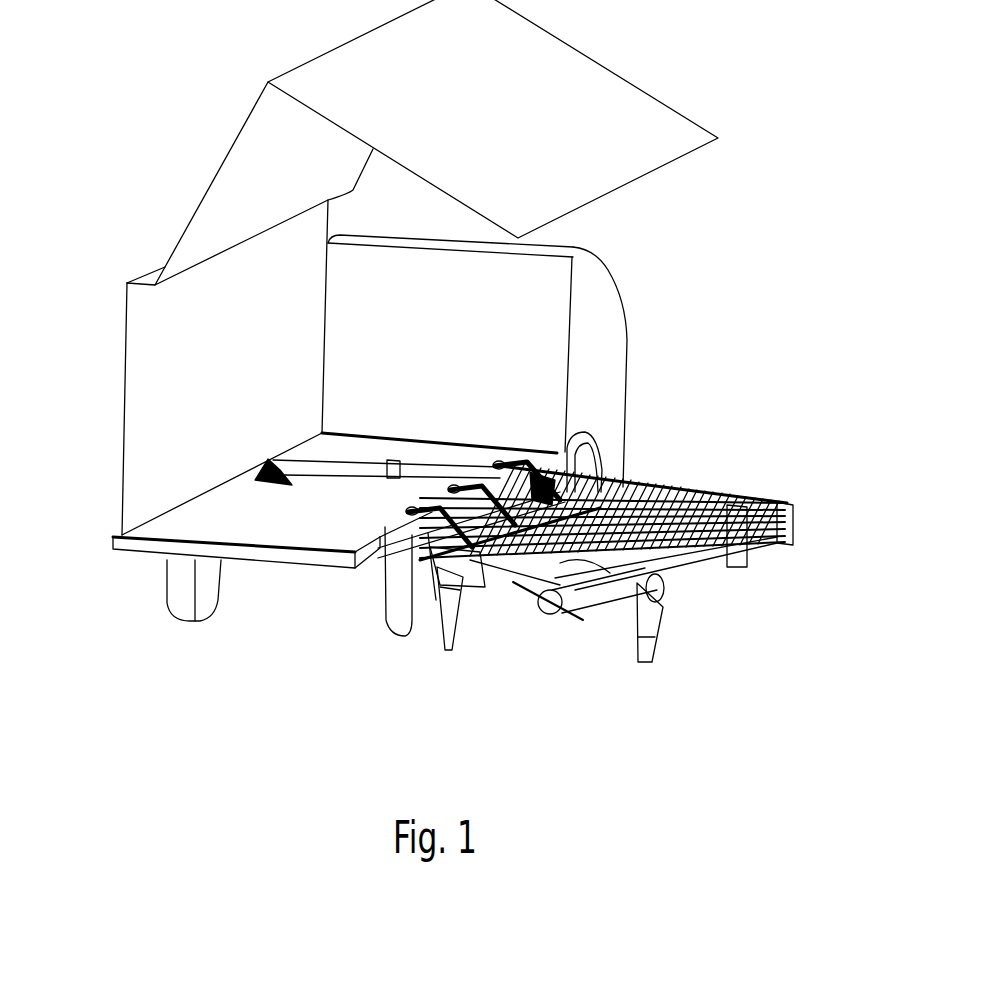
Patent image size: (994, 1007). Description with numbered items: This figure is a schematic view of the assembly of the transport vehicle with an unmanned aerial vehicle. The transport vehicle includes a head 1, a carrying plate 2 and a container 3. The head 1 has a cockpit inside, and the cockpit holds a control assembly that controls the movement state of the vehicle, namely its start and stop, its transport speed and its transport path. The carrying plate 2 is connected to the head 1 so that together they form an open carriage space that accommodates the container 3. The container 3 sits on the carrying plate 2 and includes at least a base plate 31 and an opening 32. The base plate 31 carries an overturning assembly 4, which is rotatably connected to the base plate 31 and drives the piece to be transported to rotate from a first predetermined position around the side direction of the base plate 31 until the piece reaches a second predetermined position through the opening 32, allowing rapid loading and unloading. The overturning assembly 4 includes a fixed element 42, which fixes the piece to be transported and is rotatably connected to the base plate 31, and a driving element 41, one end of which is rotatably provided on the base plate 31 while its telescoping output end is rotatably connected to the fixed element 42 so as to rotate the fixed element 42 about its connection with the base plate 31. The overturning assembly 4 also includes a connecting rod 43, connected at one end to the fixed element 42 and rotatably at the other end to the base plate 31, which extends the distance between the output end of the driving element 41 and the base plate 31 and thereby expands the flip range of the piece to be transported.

The head 1 is at (602, 338).
The carrying plate 2 is at (122, 546).
The container 3 is at (227, 196).
The base plate 31 is at (306, 530).
The opening 32 is at (385, 515).
The overturning assembly 4 is at (712, 483).
The driving element 41 is at (342, 463).
The fixed element 42 is at (652, 492).
The connecting rod 43 is at (460, 590).